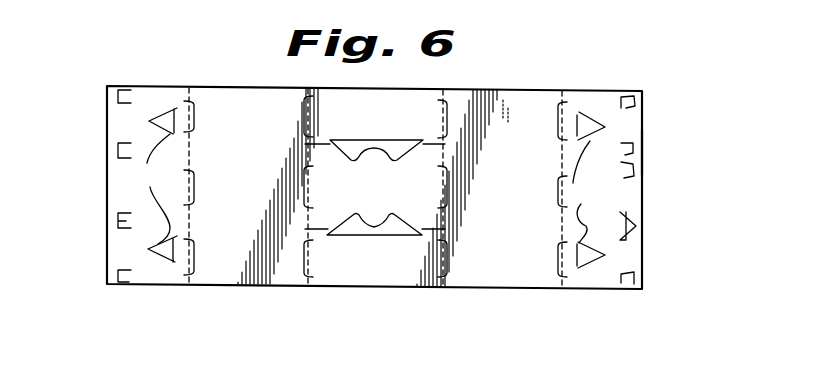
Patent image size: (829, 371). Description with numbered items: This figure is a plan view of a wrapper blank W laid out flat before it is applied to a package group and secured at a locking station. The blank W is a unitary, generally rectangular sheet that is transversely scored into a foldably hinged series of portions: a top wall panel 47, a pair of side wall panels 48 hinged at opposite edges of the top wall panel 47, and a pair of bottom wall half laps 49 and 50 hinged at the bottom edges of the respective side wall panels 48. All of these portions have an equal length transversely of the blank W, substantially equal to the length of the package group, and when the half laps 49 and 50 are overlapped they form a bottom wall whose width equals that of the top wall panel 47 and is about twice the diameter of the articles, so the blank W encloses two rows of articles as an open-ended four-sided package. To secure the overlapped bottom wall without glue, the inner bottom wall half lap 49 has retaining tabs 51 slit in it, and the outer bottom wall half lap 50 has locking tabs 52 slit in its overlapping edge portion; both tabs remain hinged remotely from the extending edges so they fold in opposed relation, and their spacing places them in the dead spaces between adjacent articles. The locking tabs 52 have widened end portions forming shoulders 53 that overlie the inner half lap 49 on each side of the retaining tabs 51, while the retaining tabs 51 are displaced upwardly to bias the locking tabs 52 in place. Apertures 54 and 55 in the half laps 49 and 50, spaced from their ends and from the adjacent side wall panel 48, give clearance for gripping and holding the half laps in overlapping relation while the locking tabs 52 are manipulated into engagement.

The wrapper blank W is at (229, 87).
The top wall panel 47 is at (364, 275).
The side wall panels 48 is at (238, 272).
The inner bottom wall half lap 49 is at (155, 274).
The outer bottom wall half lap 50 is at (597, 288).
The retaining tabs 51 is at (113, 222).
The locking tabs 52 is at (635, 152).
The shoulders 53 is at (619, 190).
The apertures 54 is at (160, 185).
The apertures 55 is at (588, 190).